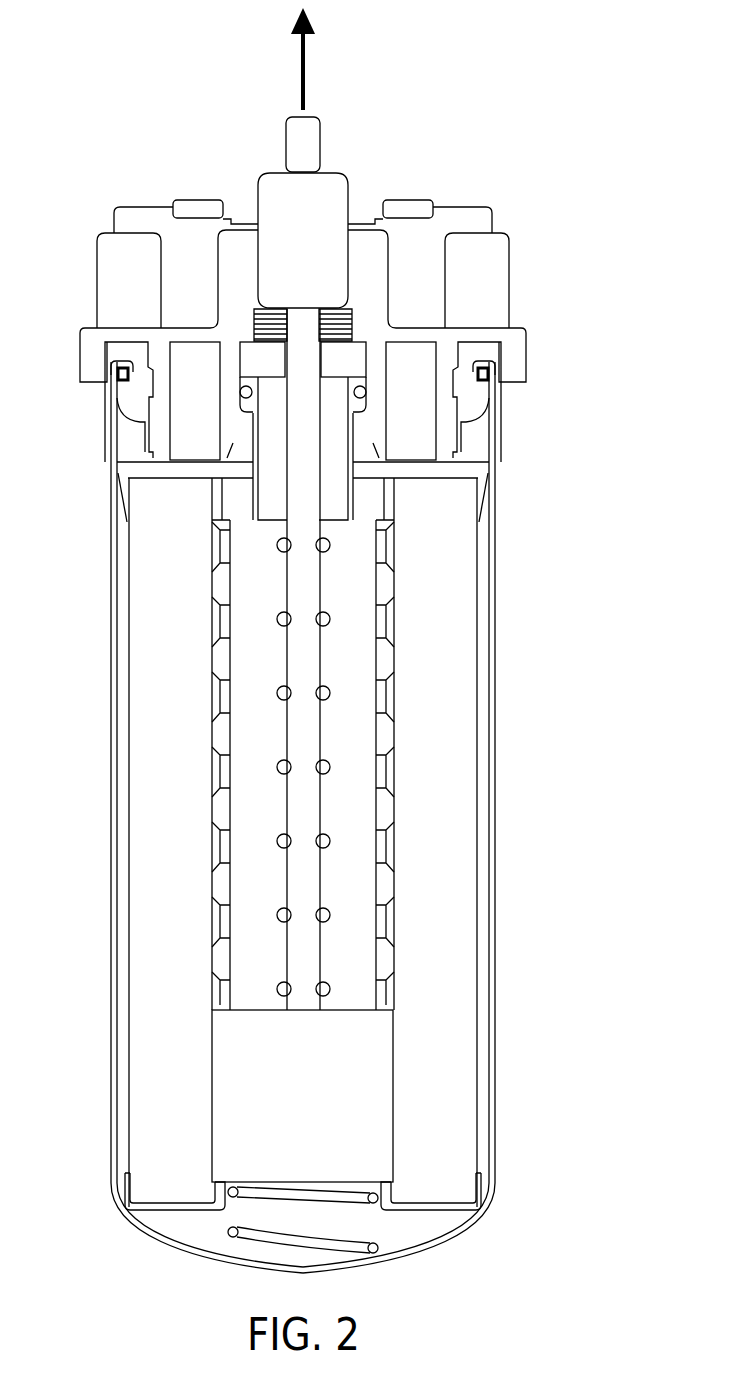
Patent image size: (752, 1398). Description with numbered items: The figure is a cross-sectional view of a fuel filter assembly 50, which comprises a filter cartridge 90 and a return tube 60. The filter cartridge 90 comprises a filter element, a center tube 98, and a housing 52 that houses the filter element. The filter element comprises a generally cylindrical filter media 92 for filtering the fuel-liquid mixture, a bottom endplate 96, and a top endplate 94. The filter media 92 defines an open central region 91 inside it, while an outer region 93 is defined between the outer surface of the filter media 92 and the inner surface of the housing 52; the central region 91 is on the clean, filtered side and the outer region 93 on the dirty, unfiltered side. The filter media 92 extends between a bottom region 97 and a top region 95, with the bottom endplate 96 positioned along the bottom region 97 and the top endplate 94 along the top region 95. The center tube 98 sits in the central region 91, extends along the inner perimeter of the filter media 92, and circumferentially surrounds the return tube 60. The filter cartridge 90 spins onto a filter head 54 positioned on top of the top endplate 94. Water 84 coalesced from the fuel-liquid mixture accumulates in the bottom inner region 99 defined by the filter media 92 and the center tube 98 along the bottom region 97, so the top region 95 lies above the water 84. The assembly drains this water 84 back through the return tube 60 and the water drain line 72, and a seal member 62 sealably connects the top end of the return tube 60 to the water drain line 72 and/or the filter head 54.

The fuel filter assembly 50 is at (578, 123).
The housing 52 is at (497, 552).
The filter head 54 is at (512, 285).
The return tube 60 is at (325, 655).
The seal member 62 is at (322, 140).
The water drain line 72 is at (306, 75).
The water 84 is at (380, 1053).
The filter cartridge 90 is at (480, 763).
The central region 91 is at (357, 960).
The filter media 92 is at (448, 827).
The outer region 93 is at (485, 963).
The top endplate 94 is at (473, 458).
The top region 95 is at (450, 502).
The bottom endplate 96 is at (447, 1212).
The bottom region 97 is at (453, 1190).
The center tube 98 is at (212, 728).
The bottom inner region 99 is at (357, 1098).